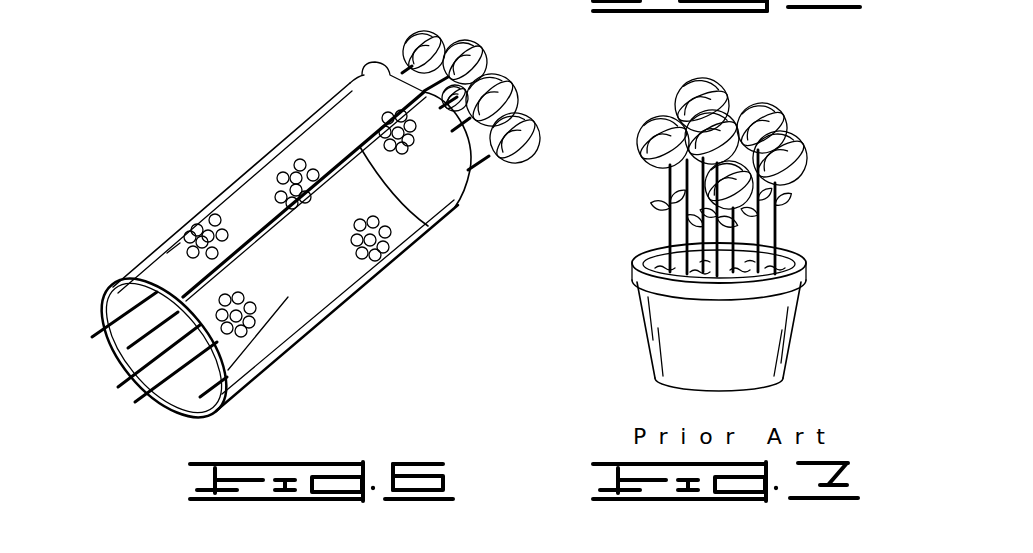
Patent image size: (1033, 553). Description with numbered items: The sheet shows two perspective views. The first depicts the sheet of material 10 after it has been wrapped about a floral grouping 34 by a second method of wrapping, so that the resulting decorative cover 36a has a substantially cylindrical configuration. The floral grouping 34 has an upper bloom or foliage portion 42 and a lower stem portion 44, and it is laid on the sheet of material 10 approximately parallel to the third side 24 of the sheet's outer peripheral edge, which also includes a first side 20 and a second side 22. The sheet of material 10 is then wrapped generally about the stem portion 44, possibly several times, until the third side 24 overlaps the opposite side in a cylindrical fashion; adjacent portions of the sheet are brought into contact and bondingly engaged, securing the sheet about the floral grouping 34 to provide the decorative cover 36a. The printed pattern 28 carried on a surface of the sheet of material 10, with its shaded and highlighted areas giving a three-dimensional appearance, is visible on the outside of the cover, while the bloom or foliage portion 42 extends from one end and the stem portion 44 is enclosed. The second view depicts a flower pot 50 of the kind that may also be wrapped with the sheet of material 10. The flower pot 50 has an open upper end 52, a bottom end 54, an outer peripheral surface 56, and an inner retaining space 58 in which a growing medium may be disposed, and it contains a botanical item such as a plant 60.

In FIG. 6, the sheet of material 10 is at (232, 80).
In FIG. 6, the first side 20 is at (167, 413).
In FIG. 6, the second side 22 is at (383, 72).
In FIG. 6, the third side 24 is at (423, 227).
In FIG. 6, the printed pattern 28 is at (293, 163).
In FIG. 6, the floral grouping 34 is at (397, 50).
In FIG. 6, the decorative cover 36a is at (205, 203).
In FIG. 6, the bloom or foliage portion 42 is at (487, 43).
In FIG. 6, the stem portion 44 is at (137, 340).
In FIG. 7, the flower pot 50 is at (607, 280).
In FIG. 7, the open upper end 52 is at (652, 247).
In FIG. 7, the bottom end 54 is at (768, 390).
In FIG. 7, the outer peripheral surface 56 is at (763, 318).
In FIG. 7, the inner retaining space 58 is at (785, 247).
In FIG. 7, the plant 60 is at (800, 187).